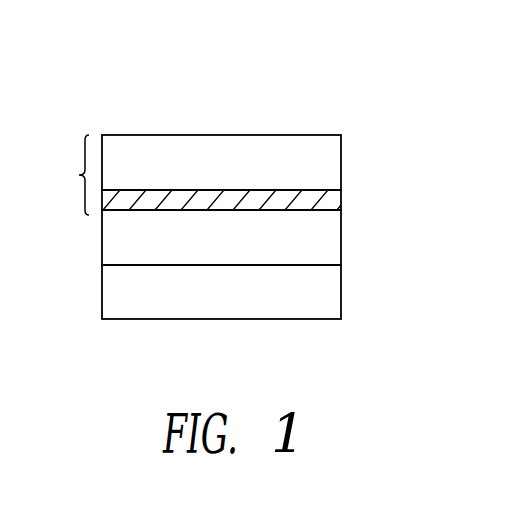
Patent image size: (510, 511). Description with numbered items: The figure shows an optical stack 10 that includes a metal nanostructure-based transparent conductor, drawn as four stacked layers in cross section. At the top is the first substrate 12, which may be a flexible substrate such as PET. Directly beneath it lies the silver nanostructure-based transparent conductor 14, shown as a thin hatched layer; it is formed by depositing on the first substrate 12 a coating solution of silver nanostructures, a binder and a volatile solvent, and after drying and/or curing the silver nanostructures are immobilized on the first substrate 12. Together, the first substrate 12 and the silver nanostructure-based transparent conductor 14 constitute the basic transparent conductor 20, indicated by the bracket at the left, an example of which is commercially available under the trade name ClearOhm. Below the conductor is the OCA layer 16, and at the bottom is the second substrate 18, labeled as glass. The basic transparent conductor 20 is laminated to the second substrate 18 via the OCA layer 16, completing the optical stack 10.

The optical stack 10 is at (325, 71).
The first substrate 12 is at (341, 155).
The silver nanostructure-based transparent conductor 14 is at (341, 197).
The OCA layer 16 is at (341, 237).
The second substrate 18 is at (341, 294).
The basic transparent conductor 20 is at (67, 175).